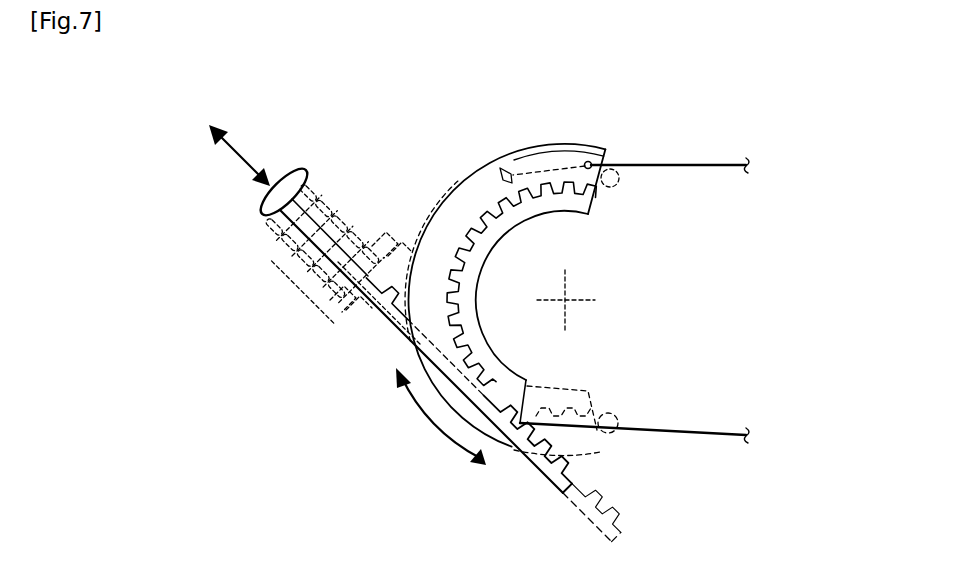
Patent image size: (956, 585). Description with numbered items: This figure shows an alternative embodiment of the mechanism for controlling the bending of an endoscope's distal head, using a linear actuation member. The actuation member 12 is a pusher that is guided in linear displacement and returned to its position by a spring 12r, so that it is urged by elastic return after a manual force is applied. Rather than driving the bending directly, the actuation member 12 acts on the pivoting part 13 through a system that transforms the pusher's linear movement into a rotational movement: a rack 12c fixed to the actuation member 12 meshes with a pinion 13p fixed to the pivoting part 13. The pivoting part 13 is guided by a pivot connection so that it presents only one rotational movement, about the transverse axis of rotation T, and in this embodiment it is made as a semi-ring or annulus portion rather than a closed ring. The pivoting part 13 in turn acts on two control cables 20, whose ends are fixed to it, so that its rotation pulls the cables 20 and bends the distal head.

The actuation member 12 is at (260, 211).
The spring 12r is at (298, 247).
The rack 12c is at (557, 474).
The pivoting part 13 is at (493, 177).
The pinion 13p is at (565, 203).
The transverse axis of rotation T is at (565, 303).
The control cables 20 is at (685, 163).